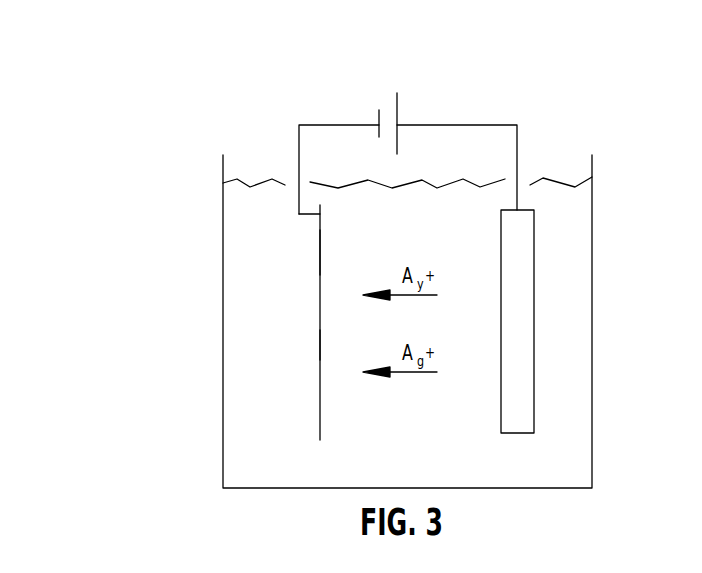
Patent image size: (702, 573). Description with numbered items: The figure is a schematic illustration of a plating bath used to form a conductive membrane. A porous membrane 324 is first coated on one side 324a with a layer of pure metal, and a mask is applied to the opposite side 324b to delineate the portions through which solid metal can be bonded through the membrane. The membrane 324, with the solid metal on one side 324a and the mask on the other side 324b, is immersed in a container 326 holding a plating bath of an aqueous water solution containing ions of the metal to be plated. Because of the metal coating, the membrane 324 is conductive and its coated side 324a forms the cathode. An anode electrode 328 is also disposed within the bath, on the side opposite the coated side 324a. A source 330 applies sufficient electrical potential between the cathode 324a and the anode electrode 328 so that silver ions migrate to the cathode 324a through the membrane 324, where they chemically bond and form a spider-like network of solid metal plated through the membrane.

The porous membrane 324 is at (320, 420).
The coated side of membrane 324a is at (320, 343).
The opposite side of membrane 324b is at (320, 267).
The container 326 is at (592, 317).
The anode electrode 328 is at (515, 267).
The source 330 is at (447, 78).